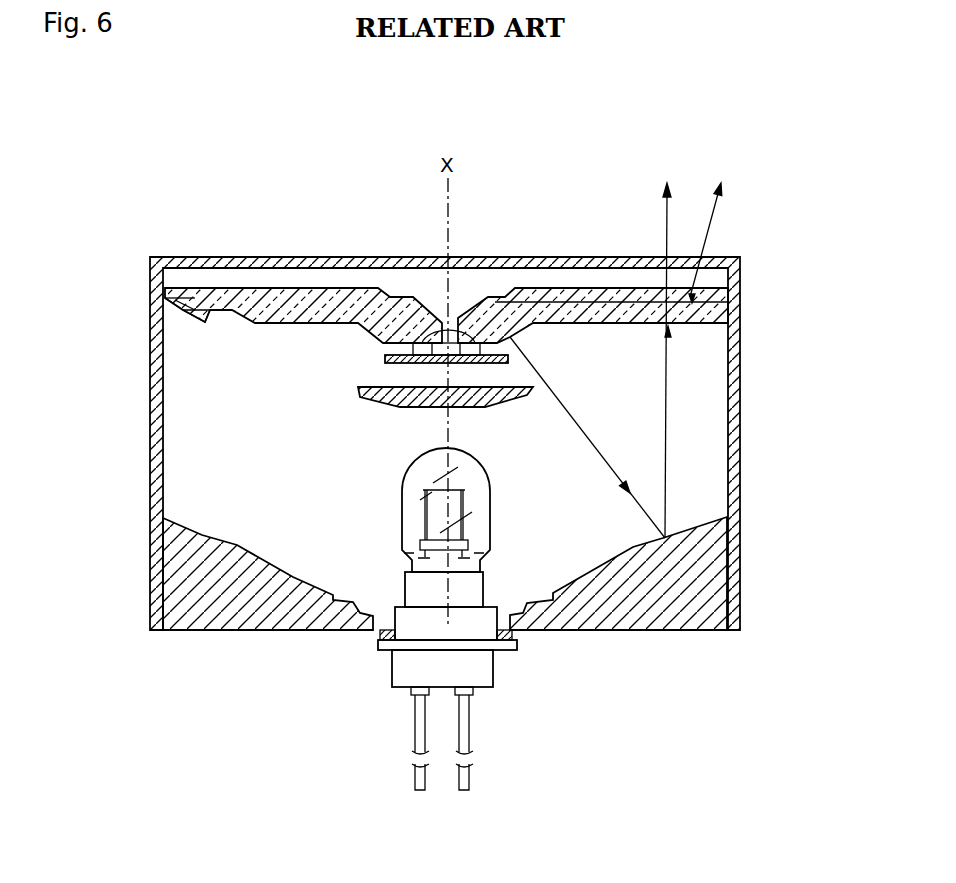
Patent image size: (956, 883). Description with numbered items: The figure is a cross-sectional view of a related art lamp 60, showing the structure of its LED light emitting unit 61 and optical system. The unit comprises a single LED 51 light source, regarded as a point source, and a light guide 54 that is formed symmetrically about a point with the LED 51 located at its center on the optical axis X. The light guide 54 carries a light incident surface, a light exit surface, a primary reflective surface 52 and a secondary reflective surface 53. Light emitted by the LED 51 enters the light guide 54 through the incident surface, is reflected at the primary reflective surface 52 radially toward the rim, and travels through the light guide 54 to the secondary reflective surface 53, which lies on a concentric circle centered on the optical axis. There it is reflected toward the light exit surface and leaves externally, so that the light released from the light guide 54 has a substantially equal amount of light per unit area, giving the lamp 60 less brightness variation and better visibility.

The LED 51 is at (457, 352).
The primary reflective surface 52 is at (402, 297).
The secondary reflective surface 53 is at (256, 312).
The light guide 54 is at (574, 292).
The lamp 60 is at (760, 226).
The LED light emitting unit 61 is at (652, 360).